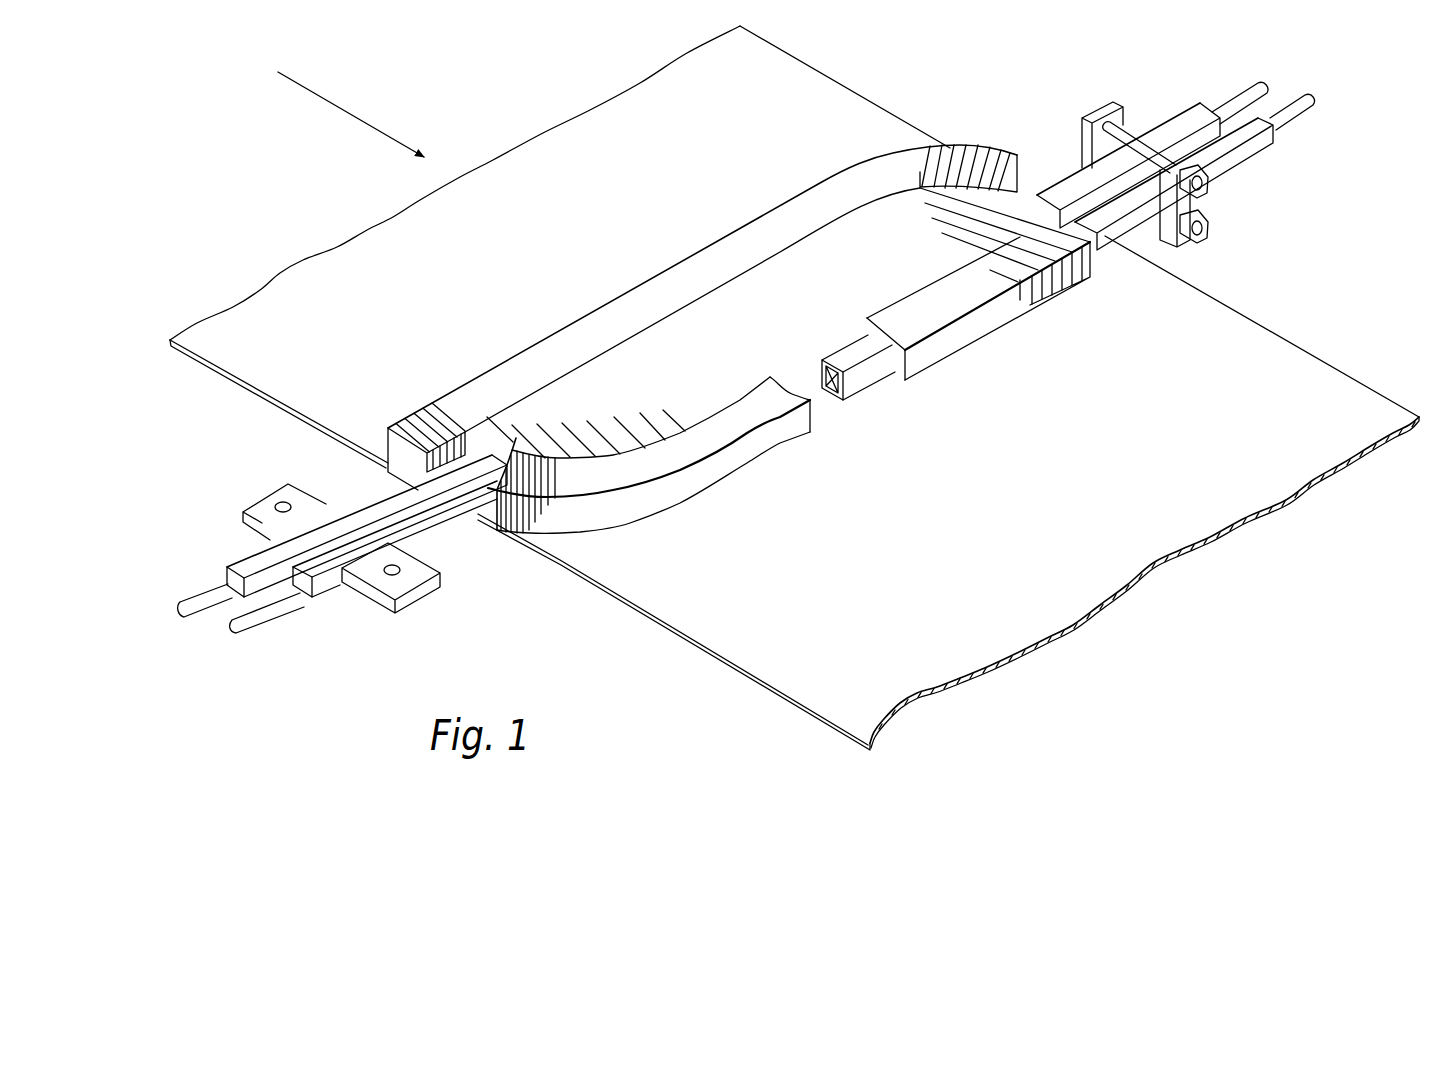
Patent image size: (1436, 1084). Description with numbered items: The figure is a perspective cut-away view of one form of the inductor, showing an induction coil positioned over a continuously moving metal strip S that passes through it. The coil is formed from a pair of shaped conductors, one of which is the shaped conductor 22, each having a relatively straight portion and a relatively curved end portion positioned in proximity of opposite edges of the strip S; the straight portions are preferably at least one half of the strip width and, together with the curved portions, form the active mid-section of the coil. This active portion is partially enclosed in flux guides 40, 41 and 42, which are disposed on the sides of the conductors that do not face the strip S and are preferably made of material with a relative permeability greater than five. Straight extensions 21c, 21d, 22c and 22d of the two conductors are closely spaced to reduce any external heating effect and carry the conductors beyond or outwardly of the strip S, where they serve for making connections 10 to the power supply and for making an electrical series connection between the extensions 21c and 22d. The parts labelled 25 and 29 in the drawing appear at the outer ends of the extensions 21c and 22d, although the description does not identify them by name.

The connections 10 is at (265, 508).
The straight extension 21c is at (1067, 176).
The straight extension 21d is at (347, 497).
The shaped conductor 22 is at (862, 400).
The straight extension 22c is at (433, 525).
The straight extension 22d is at (1233, 162).
The bracket post 25 is at (1095, 117).
The pin 29 is at (1130, 135).
The flux guide 40 is at (543, 358).
The flux guide 41 is at (876, 243).
The flux guide 42 is at (721, 426).
The metal strip S is at (1276, 480).